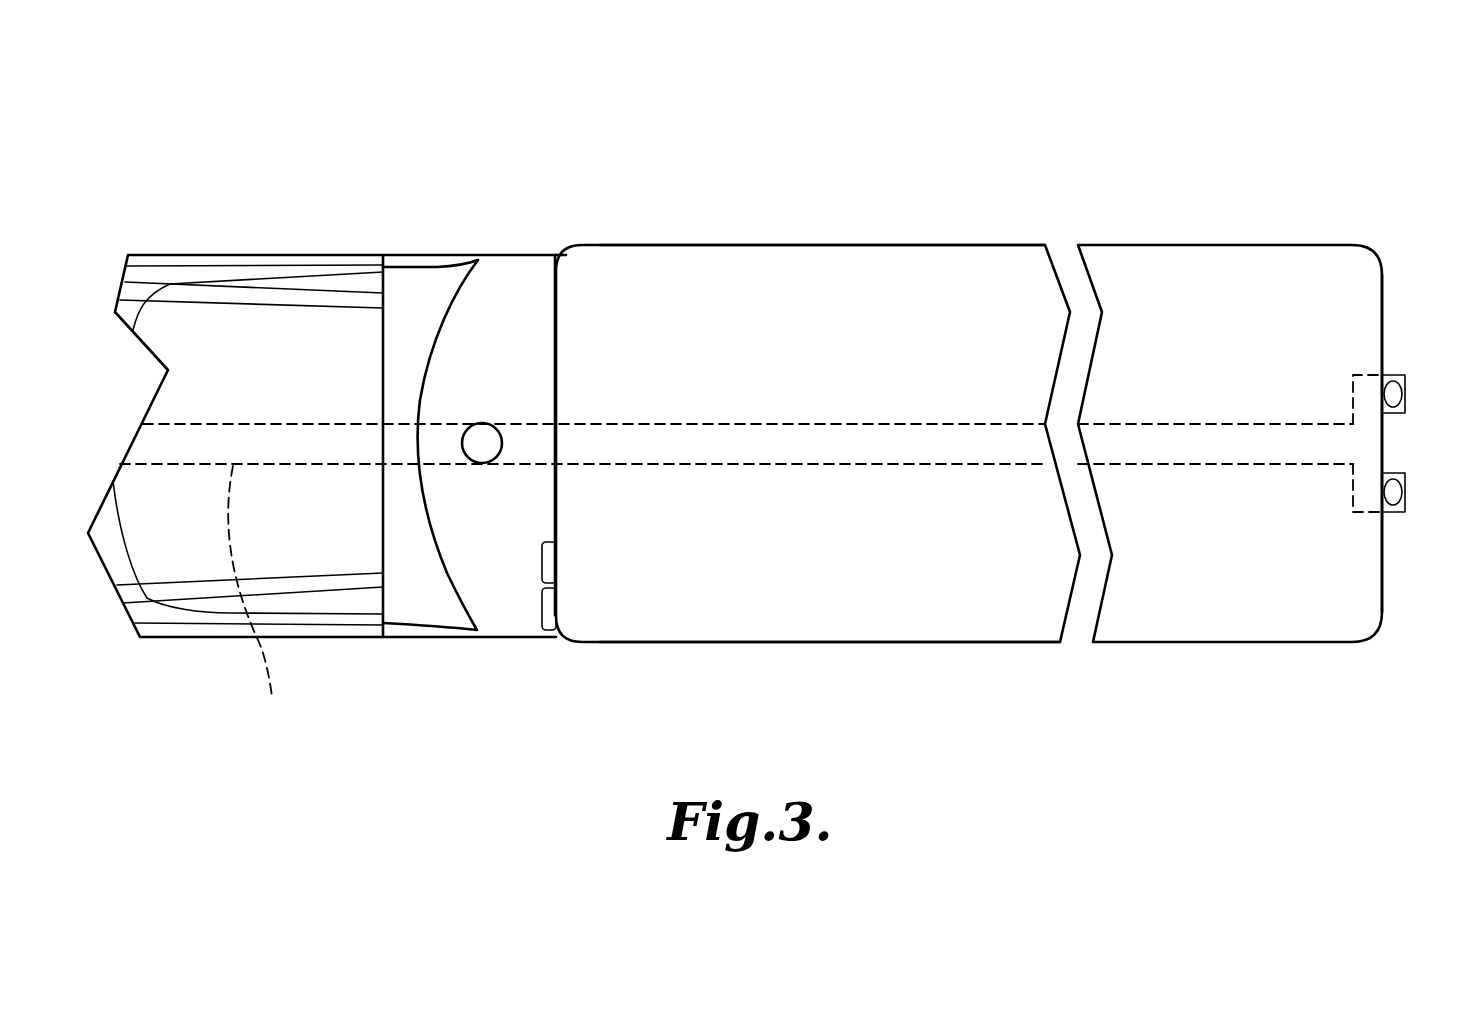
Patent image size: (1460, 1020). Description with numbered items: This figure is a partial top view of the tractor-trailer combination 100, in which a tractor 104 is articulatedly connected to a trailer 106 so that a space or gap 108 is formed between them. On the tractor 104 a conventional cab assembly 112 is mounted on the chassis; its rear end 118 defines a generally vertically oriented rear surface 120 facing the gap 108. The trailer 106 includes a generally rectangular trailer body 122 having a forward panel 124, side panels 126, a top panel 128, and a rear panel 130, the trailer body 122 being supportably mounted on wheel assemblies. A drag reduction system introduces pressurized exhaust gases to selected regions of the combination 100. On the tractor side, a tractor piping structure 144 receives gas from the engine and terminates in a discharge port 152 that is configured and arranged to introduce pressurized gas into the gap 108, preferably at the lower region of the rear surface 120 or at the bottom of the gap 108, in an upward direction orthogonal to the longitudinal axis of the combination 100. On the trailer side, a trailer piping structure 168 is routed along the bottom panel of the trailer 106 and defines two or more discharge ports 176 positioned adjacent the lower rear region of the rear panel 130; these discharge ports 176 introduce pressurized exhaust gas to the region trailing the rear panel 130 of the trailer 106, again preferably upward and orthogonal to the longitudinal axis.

The tractor-trailer combination 100 is at (316, 95).
The tractor 104 is at (157, 677).
The trailer 106 is at (629, 672).
The gap 108 is at (470, 362).
The cab assembly 112 is at (207, 340).
The rear end 118 is at (332, 285).
The rear surface 120 is at (447, 573).
The trailer body 122 is at (640, 246).
The forward panel 124 is at (556, 306).
The side panels 126 is at (898, 245).
The top panel 128 is at (770, 384).
The rear panel 130 is at (1384, 305).
The tractor piping structure 144 is at (260, 596).
The discharge port 152 is at (482, 463).
The trailer piping structure 168 is at (867, 465).
The discharge port 176 is at (1393, 394).